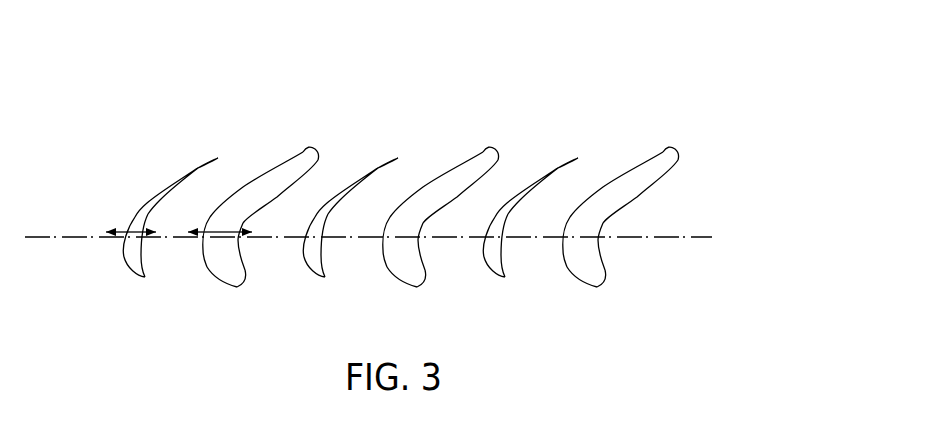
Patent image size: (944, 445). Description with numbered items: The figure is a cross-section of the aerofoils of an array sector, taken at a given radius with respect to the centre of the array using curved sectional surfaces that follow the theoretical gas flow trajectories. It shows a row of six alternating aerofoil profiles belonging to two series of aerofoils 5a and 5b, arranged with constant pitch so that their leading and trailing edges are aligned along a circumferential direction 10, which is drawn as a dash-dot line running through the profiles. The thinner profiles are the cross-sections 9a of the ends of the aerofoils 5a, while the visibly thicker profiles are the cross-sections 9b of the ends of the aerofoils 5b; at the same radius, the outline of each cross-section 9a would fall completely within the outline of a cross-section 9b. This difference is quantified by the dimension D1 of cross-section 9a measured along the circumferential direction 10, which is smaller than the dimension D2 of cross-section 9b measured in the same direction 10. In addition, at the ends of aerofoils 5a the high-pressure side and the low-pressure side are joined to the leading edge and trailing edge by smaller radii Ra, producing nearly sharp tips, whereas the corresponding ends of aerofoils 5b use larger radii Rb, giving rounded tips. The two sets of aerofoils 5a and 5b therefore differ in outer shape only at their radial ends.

The aerofoil 5a is at (118, 256).
The aerofoil 5b is at (213, 288).
The cross-section 9a is at (160, 197).
The cross-section 9b is at (265, 184).
The radii Ra is at (216, 156).
The radii Rb is at (311, 150).
The dimension D1 is at (132, 230).
The dimension D2 is at (222, 232).
The circumferential direction 10 is at (695, 237).